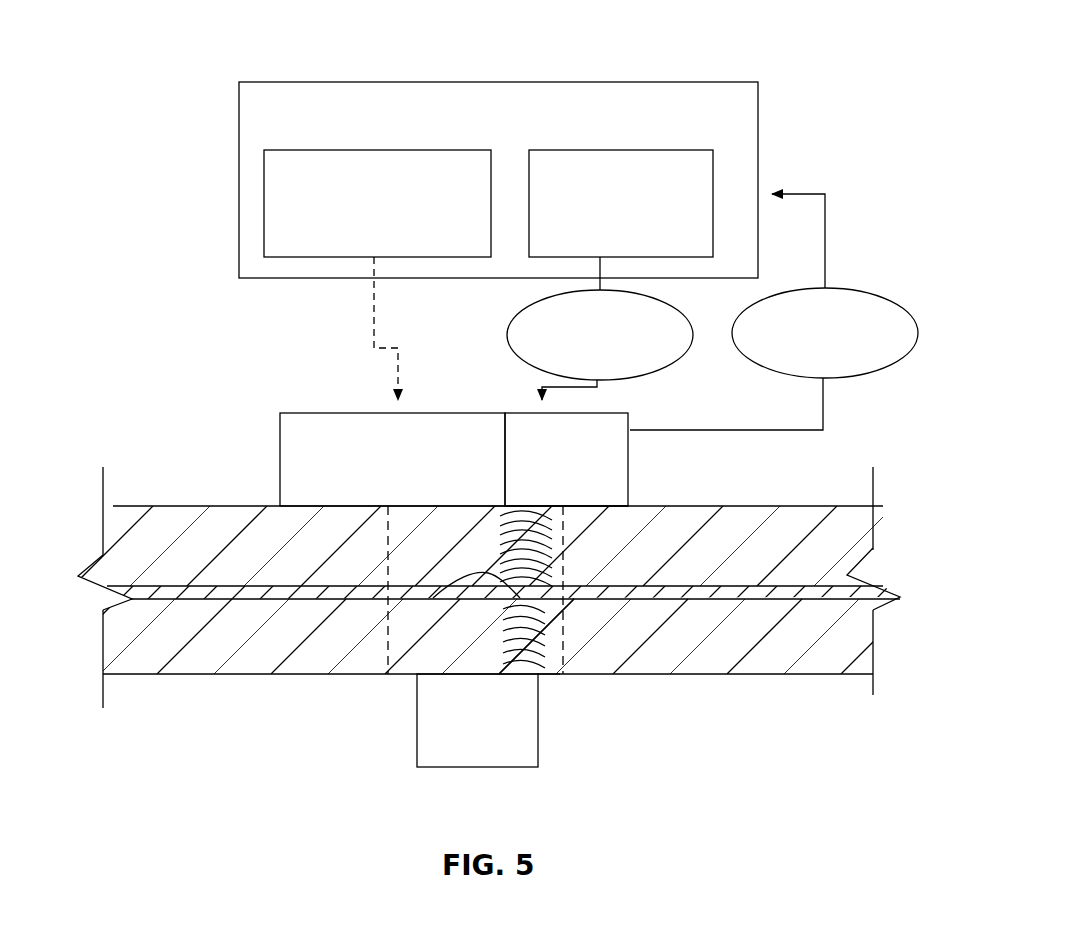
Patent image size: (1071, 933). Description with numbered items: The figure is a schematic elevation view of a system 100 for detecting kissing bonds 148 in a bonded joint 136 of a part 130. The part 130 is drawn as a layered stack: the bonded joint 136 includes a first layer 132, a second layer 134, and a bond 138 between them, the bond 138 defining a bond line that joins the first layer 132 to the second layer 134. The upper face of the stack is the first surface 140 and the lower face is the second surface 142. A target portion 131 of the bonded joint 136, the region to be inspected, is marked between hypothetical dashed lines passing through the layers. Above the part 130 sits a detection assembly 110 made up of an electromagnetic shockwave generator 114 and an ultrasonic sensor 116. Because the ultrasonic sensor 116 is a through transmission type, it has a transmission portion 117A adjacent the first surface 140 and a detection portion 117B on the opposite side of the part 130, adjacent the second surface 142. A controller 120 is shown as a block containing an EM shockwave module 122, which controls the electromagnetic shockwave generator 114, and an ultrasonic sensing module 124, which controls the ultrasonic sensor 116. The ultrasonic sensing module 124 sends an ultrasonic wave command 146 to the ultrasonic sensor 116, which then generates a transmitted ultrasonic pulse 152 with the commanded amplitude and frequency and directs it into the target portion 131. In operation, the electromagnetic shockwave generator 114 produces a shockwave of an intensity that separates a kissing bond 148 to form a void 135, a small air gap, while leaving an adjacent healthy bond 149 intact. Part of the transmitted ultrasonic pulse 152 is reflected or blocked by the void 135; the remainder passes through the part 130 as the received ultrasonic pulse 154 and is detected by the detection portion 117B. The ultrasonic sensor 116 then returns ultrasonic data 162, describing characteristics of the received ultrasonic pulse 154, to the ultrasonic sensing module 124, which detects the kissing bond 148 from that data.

The system 100 is at (792, 56).
The detection assembly 110 is at (438, 459).
The electromagnetic shockwave generator 114 is at (300, 440).
The ultrasonic sensor 116 is at (641, 446).
The transmission portion 117A is at (606, 481).
The detection portion 117B is at (453, 757).
The controller 120 is at (542, 120).
The EM shockwave module 122 is at (360, 242).
The ultrasonic sensing module 124 is at (604, 242).
The part 130 is at (479, 588).
The target portion 131 is at (549, 686).
The first layer 132 is at (489, 514).
The second layer 134 is at (479, 672).
The void 135 is at (475, 588).
The bonded joint 136 is at (344, 688).
The bond 138 is at (175, 598).
The first surface 140 is at (740, 506).
The second surface 142 is at (653, 676).
The ultrasonic wave command 146 is at (512, 320).
The kissing bond 148 is at (462, 616).
The healthy bond 149 is at (557, 614).
The transmitted ultrasonic pulse 152 is at (454, 528).
The received ultrasonic pulse 154 is at (468, 654).
The ultrasonic data 162 is at (878, 297).